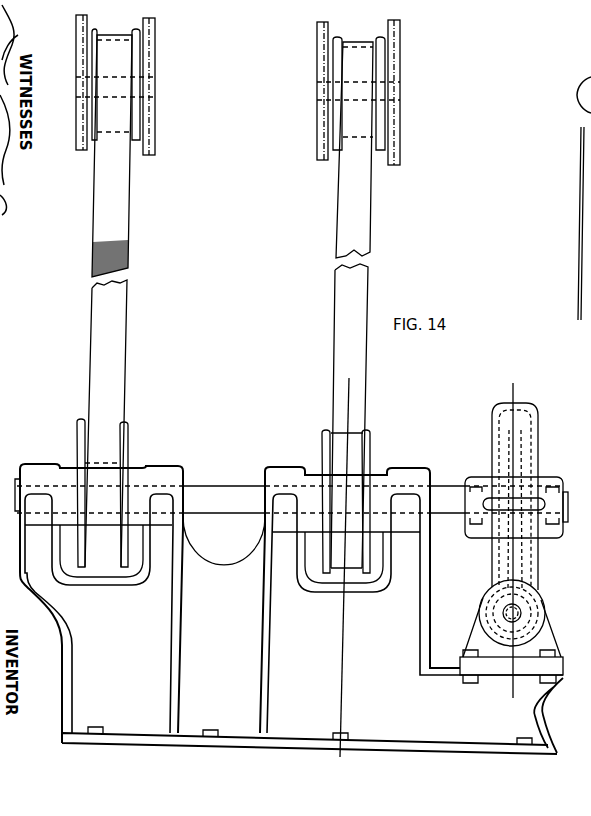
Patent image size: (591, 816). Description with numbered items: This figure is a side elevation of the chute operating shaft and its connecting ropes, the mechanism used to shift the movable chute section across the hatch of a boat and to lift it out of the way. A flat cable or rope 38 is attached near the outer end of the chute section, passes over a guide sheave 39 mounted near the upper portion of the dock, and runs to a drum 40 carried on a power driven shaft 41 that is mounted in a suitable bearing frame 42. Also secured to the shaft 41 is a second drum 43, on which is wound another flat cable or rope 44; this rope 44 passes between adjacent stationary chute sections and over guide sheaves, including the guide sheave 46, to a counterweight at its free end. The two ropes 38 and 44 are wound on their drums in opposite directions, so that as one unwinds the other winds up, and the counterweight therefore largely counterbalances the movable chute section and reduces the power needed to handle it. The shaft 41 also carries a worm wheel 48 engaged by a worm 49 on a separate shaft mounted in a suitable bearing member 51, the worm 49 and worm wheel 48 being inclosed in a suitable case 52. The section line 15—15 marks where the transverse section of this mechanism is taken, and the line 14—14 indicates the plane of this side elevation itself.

The cable or rope 38 is at (364, 238).
The guide sheave 39 is at (383, 66).
The drum 40 is at (372, 440).
The power driven shaft 41 is at (201, 486).
The bearing frame 42 is at (309, 635).
The drum 43 is at (127, 447).
The cable or rope 44 is at (128, 362).
The guide sheave 46 is at (138, 62).
The worm wheel 48 is at (537, 424).
The worm 49 is at (521, 610).
The bearing member 51 is at (545, 636).
The case 52 is at (538, 405).
The section line 14 is at (347, 573).
The section line 15 is at (513, 543).